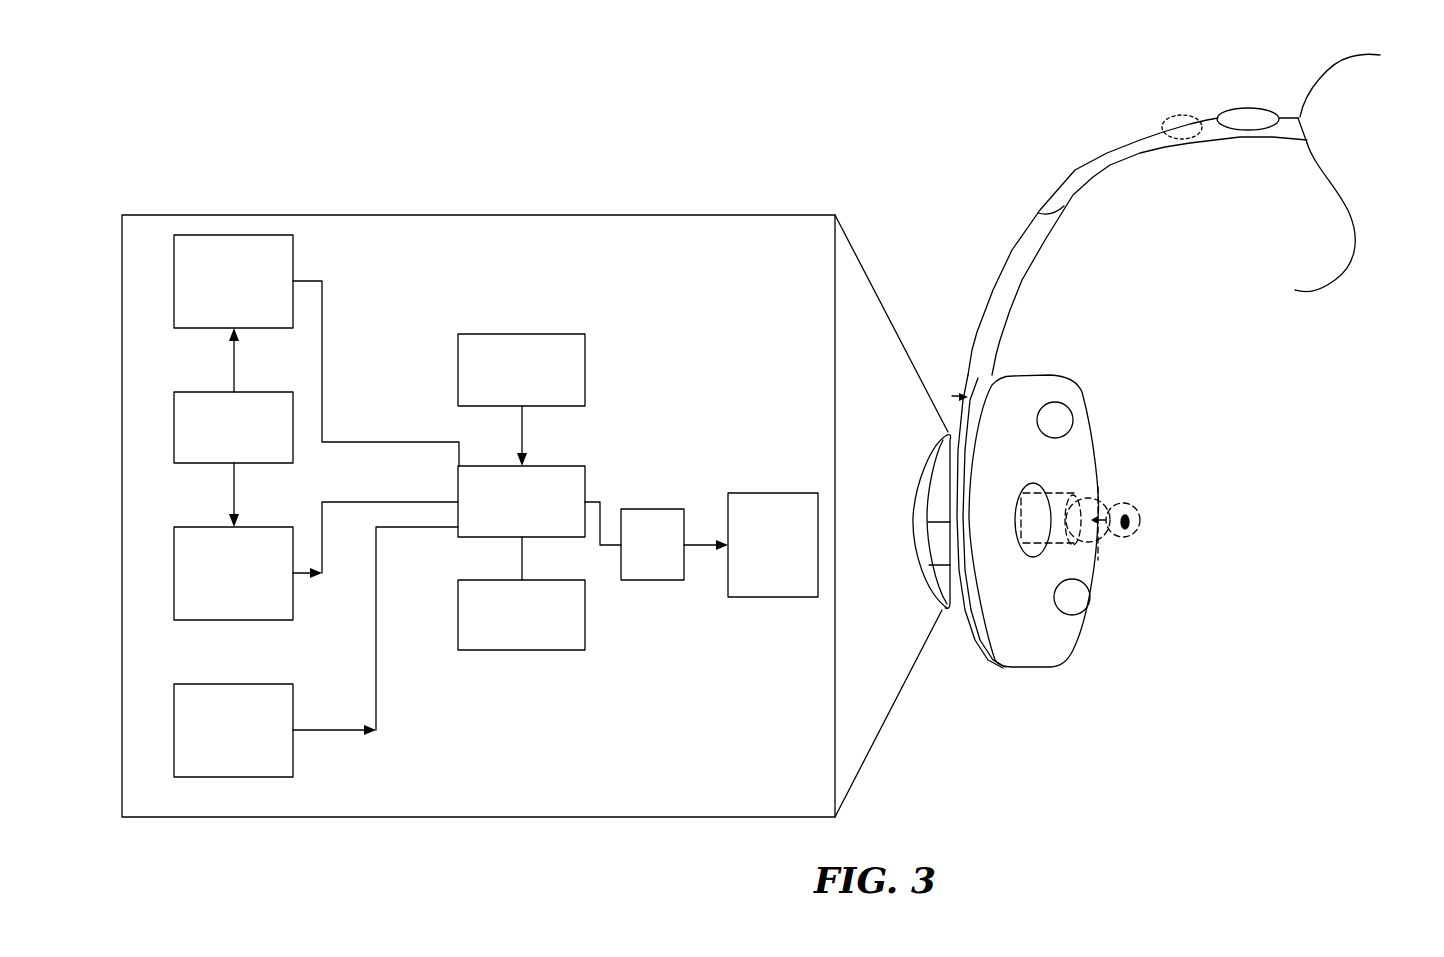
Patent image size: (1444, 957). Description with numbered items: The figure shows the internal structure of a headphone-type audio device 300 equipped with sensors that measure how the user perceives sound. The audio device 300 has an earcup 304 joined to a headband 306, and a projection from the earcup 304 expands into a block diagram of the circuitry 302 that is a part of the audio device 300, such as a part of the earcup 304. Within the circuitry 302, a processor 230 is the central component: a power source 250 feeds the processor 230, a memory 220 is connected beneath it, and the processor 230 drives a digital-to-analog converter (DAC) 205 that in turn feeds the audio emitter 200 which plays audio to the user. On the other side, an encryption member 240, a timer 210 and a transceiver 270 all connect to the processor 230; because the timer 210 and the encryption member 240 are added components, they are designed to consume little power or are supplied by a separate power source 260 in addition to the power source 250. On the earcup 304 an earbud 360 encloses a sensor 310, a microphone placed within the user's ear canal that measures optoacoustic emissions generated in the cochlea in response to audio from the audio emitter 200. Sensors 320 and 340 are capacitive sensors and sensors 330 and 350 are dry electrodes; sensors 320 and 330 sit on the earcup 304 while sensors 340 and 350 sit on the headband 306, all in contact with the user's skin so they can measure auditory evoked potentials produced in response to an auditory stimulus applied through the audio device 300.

The audio emitter 200 is at (773, 545).
The digital-to-analog converter (DAC) 205 is at (652, 544).
The timer 210 is at (233, 573).
The memory 220 is at (521, 615).
The processor 230 is at (521, 501).
The encryption member 240 is at (233, 281).
The power source 250 is at (521, 370).
The power source 260 is at (233, 427).
The transceiver 270 is at (233, 730).
The audio device 300 is at (1013, 249).
The circuitry 302 is at (222, 213).
The earcup 304 is at (1003, 668).
The headband 306 is at (968, 335).
The sensor 310 is at (1117, 503).
The sensor 320 is at (1063, 597).
The sensor 330 is at (1073, 420).
The sensor 340 is at (1248, 128).
The sensor 350 is at (1180, 127).
The earbud 360 is at (1127, 537).